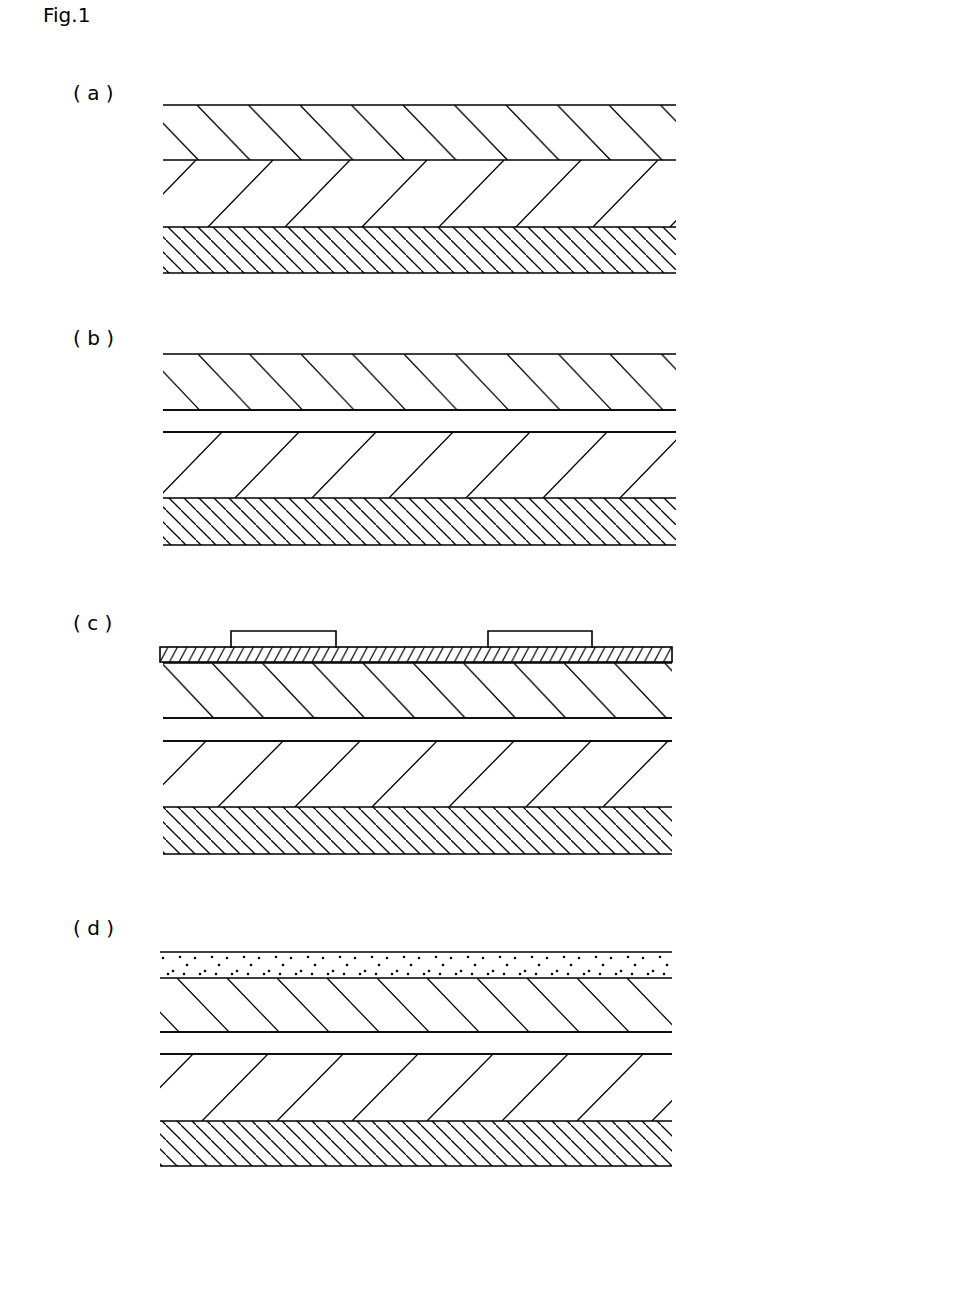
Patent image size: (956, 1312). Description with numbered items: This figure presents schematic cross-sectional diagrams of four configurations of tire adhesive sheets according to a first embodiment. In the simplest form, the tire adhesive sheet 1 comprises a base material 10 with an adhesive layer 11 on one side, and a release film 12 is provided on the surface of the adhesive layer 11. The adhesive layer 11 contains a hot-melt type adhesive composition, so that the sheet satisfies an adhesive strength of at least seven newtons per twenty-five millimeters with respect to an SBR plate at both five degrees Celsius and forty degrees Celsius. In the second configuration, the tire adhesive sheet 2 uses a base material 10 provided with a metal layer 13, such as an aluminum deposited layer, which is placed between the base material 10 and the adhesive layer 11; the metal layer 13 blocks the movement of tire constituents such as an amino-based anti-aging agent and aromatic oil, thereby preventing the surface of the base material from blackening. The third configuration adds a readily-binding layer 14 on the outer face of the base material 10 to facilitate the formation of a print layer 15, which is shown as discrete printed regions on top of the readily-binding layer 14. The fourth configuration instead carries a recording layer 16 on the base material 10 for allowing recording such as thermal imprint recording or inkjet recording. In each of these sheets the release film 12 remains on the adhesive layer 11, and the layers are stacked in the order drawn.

The tire adhesive sheet 1 is at (793, 125).
The tire adhesive sheet 2 is at (793, 373).
The base material 10 is at (678, 142).
The adhesive layer 11 is at (678, 193).
The release film 12 is at (678, 240).
The metal layer 13 is at (678, 425).
The readily-binding layer 14 is at (674, 660).
The print layer 15 is at (568, 631).
The recording layer 16 is at (674, 965).